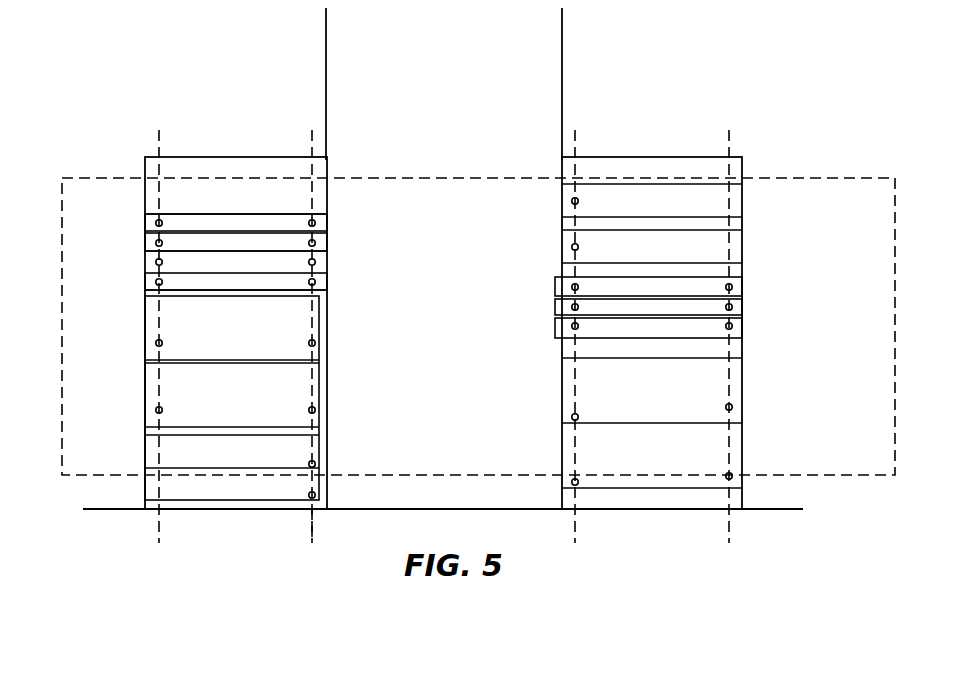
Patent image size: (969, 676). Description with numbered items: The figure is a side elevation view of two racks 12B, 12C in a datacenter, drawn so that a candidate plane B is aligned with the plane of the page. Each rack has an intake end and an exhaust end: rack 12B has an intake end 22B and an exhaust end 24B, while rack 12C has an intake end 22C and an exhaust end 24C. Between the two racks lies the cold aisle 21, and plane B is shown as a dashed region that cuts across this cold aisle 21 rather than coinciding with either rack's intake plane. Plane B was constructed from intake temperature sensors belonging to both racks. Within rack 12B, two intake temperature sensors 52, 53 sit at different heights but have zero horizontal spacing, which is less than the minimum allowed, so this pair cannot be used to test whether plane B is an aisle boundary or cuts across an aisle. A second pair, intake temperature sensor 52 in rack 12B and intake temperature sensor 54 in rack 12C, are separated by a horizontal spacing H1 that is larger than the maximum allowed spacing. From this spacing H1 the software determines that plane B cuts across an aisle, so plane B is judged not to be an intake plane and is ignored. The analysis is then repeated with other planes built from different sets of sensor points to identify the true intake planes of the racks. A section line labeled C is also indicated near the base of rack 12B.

The rack 12B is at (247, 316).
The rack 12C is at (652, 316).
The intake temperature sensor 52 is at (317, 223).
The intake temperature sensor 53 is at (316, 243).
The intake end 22B is at (313, 315).
The exhaust end 24B is at (158, 320).
The intake temperature sensor 54 is at (572, 201).
The intake end 22C is at (575, 343).
The exhaust end 24C is at (729, 343).
The cold aisle 21 is at (458, 433).
The plane B is at (850, 424).
The section line C is at (312, 518).
The spacing H1 is at (326, 33).